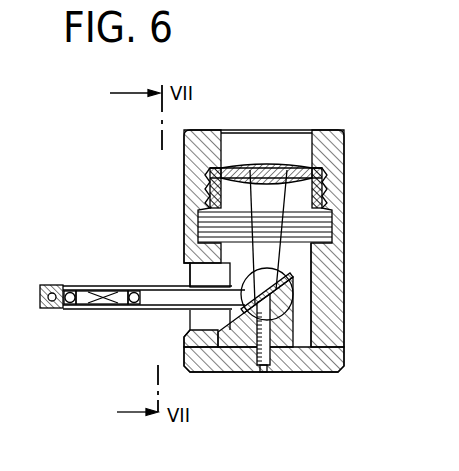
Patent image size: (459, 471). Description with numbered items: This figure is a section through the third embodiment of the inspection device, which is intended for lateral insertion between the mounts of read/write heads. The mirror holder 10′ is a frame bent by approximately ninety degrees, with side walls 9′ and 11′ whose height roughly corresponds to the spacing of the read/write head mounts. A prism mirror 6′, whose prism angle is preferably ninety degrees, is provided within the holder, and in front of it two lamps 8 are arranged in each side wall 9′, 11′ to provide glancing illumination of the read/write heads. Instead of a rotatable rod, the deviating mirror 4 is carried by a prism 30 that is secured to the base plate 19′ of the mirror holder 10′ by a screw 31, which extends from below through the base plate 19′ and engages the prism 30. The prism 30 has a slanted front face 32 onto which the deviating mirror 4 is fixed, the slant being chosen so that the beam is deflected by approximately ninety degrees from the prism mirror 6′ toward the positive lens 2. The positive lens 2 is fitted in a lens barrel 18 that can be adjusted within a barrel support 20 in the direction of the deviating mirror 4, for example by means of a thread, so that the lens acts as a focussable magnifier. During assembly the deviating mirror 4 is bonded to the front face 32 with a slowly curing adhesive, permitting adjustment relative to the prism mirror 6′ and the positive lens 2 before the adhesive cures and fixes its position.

The positive lens 2 is at (252, 168).
The deviating mirror 4 is at (283, 272).
The prism mirror 6′ is at (92, 286).
The lamps 8 is at (72, 301).
The side wall 9′ is at (150, 286).
The mirror holder 10′ is at (208, 255).
The side wall 11′ is at (42, 308).
The lens barrel 18 is at (332, 149).
The base plate 19′ is at (333, 363).
The barrel support 20 is at (336, 335).
The prism 30 is at (293, 328).
The screw 31 is at (256, 338).
The slanted front face 32 is at (245, 320).